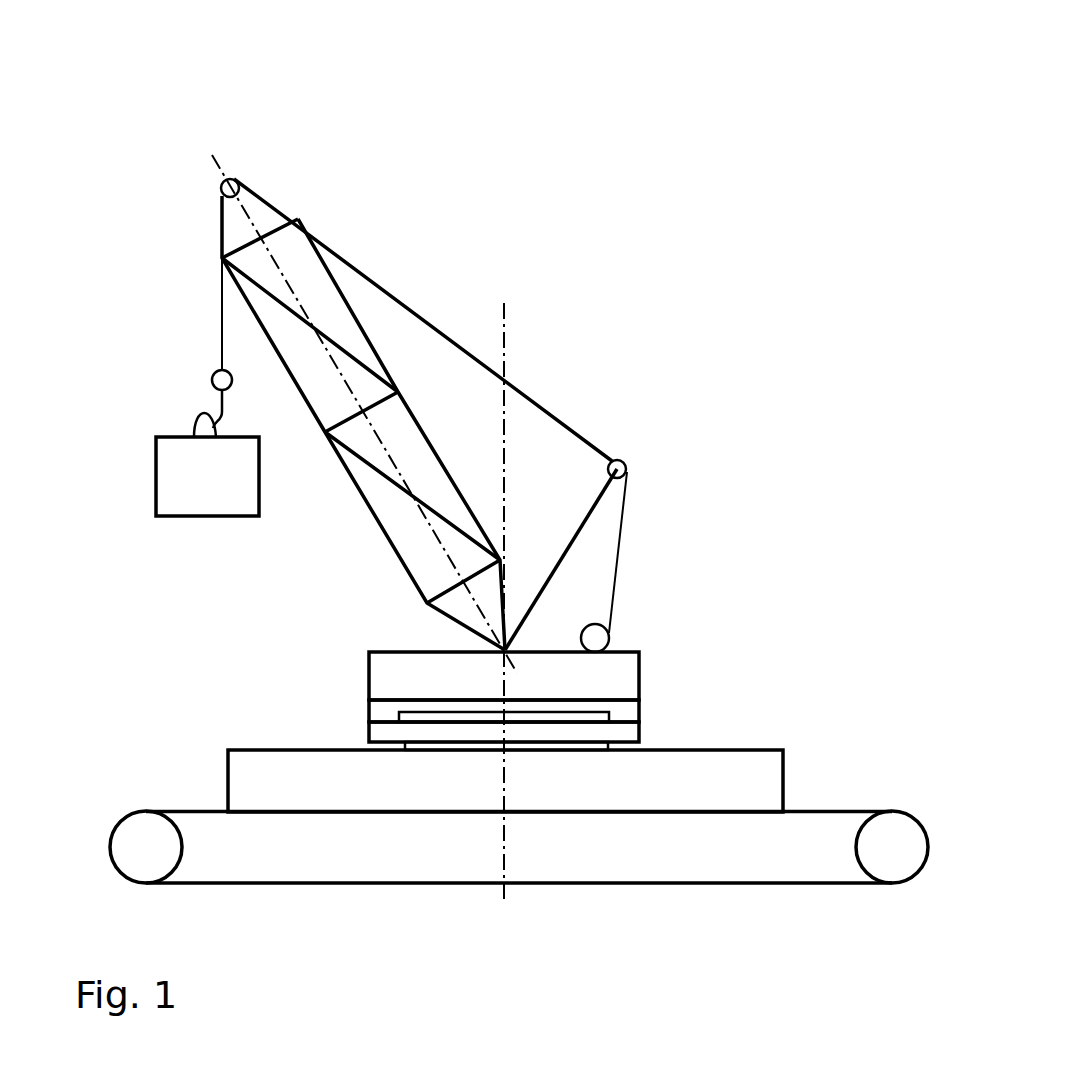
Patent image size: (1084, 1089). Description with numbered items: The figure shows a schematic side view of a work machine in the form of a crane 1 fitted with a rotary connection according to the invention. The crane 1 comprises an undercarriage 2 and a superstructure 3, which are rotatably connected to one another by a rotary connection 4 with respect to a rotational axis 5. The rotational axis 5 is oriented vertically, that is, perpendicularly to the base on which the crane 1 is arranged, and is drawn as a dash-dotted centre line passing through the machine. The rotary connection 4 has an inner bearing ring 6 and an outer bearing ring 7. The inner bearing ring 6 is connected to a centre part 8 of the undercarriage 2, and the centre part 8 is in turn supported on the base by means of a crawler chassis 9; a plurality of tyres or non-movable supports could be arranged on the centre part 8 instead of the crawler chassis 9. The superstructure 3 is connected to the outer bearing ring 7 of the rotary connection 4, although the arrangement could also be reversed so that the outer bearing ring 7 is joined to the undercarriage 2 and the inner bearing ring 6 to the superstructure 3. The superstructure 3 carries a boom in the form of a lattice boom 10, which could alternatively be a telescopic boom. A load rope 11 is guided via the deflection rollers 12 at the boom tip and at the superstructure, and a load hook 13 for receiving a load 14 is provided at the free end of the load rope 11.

The crane 1 is at (598, 84).
The undercarriage 2 is at (860, 774).
The superstructure 3 is at (652, 660).
The rotary connection 4 is at (652, 725).
The rotational axis 5 is at (504, 843).
The inner bearing ring 6 is at (395, 746).
The outer bearing ring 7 is at (376, 727).
The centre part 8 is at (744, 758).
The crawler chassis 9 is at (722, 885).
The lattice boom 10 is at (392, 547).
The load rope 11 is at (428, 312).
The deflection rollers 12 is at (234, 180).
The load hook 13 is at (190, 399).
The load 14 is at (165, 485).